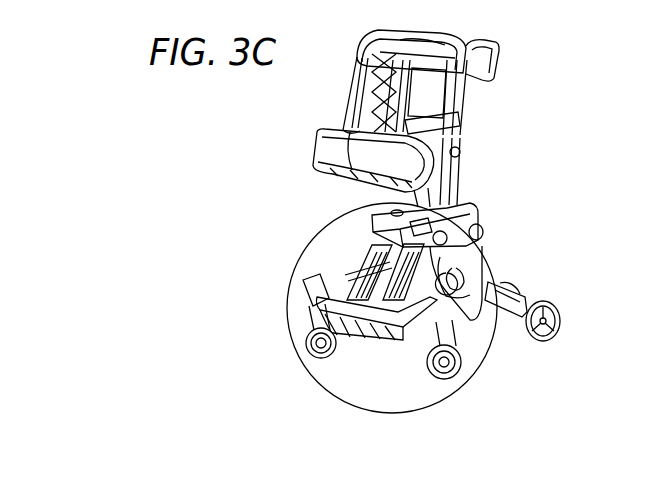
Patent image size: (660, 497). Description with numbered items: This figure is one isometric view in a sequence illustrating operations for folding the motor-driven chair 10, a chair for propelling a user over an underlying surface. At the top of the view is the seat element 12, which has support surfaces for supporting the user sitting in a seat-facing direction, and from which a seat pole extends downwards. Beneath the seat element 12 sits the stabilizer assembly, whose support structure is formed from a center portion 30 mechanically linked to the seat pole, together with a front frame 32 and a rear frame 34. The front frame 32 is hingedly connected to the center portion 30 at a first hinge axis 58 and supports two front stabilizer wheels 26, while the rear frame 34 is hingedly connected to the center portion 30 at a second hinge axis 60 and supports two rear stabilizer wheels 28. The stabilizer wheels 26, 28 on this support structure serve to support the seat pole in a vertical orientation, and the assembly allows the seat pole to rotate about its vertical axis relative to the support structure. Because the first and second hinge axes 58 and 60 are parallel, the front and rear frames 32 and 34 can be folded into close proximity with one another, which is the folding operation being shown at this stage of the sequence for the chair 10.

The motor-driven chair 10 is at (555, 92).
The seat element 12 is at (453, 28).
The front stabilizer wheels 26 is at (463, 372).
The rear stabilizer wheels 28 is at (563, 318).
The center portion 30 is at (473, 210).
The front frame 32 is at (350, 336).
The rear frame 34 is at (529, 296).
The first hinge axis 58 is at (415, 226).
The second hinge axis 60 is at (482, 232).